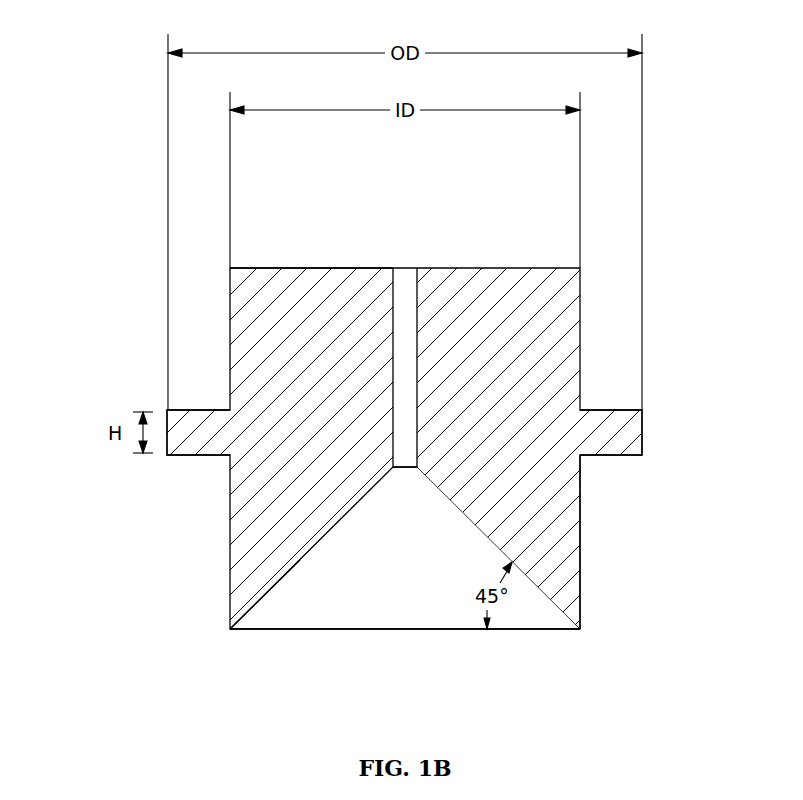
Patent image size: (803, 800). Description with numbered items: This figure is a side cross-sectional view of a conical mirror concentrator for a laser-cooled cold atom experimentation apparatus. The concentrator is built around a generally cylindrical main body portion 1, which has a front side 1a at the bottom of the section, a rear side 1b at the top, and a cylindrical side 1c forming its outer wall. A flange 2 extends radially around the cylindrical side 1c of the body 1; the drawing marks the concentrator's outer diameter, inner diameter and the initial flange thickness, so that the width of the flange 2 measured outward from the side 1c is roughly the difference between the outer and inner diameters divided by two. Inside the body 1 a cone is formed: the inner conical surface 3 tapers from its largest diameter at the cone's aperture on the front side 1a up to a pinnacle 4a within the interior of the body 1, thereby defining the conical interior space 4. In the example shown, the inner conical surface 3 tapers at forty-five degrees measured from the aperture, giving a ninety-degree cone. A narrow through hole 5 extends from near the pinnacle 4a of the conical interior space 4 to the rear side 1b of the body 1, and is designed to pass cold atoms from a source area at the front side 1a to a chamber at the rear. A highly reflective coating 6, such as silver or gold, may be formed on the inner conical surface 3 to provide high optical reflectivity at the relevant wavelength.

The main body portion 1 is at (273, 488).
The front side 1a is at (545, 642).
The rear side 1b is at (328, 263).
The cylindrical side 1c is at (588, 498).
The flange 2 is at (199, 453).
The inner conical surface 3 is at (292, 607).
The conical interior space 4 is at (418, 604).
The pinnacle 4a is at (403, 463).
The through hole 5 is at (417, 264).
The highly reflective coating 6 is at (317, 555).